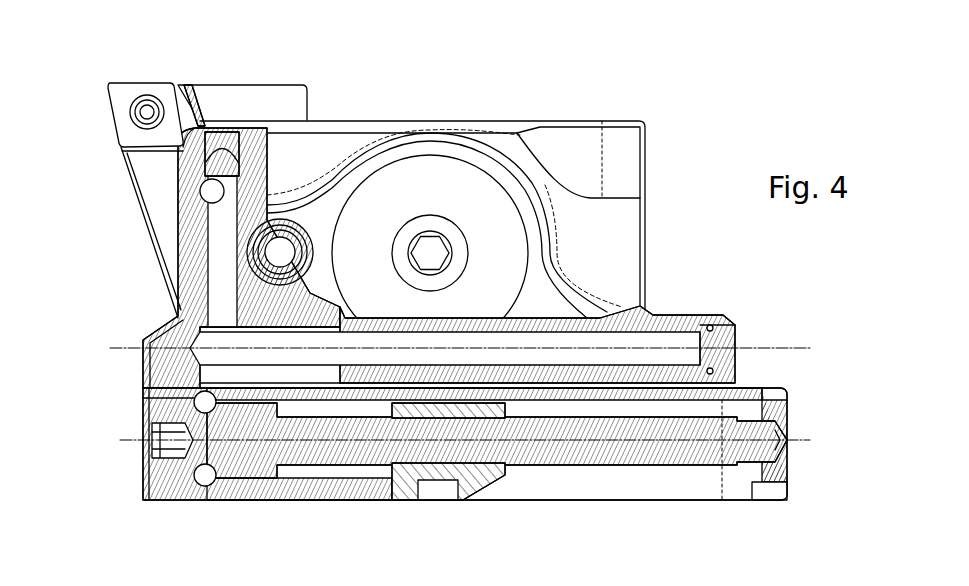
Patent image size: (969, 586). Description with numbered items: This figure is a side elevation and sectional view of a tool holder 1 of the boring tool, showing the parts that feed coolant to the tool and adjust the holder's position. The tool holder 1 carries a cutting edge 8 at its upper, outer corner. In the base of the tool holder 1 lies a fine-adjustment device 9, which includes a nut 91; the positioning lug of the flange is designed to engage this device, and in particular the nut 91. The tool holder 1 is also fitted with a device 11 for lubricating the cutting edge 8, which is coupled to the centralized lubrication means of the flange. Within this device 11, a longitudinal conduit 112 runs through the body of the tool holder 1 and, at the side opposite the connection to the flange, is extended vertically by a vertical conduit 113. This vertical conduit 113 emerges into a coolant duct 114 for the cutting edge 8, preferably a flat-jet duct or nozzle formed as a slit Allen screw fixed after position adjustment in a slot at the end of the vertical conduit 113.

The tool holder 1 is at (468, 127).
The cutting edge 8 is at (133, 90).
The fine-adjustment device 9 is at (378, 511).
The nut 91 is at (470, 472).
The device for lubricating the cutting edge 11 is at (200, 278).
The longitudinal conduit 112 is at (213, 359).
The vertical conduit 113 is at (218, 240).
The coolant duct 114 is at (210, 192).